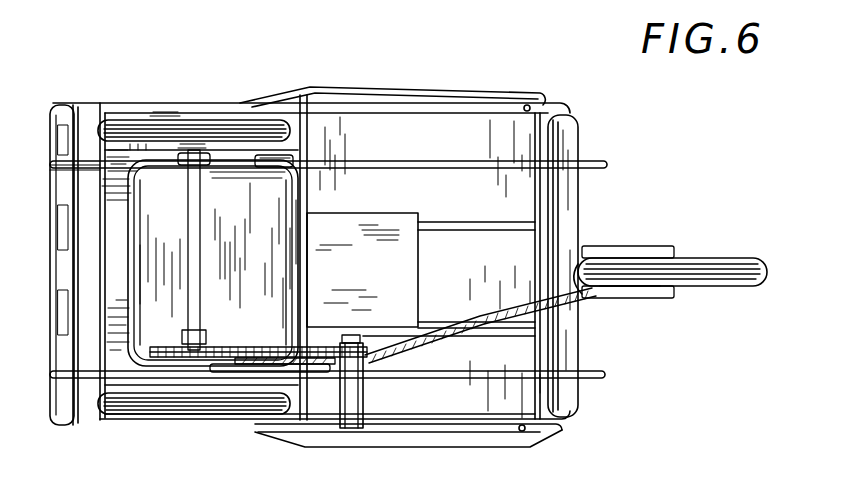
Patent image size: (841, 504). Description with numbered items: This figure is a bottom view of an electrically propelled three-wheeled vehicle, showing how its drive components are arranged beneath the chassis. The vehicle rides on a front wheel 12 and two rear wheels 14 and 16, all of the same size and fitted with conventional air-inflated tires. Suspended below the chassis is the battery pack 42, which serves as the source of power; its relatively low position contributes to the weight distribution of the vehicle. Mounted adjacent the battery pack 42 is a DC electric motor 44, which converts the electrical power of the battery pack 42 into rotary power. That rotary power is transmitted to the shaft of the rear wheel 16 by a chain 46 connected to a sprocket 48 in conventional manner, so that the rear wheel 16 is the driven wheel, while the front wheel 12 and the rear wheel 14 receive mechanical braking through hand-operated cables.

The front wheel 12 is at (766, 290).
The rear wheel 14 is at (232, 129).
The rear wheel 16 is at (231, 404).
The battery pack 42 is at (413, 214).
The DC electric motor 44 is at (357, 408).
The chain 46 is at (261, 347).
The sprocket 48 is at (154, 345).